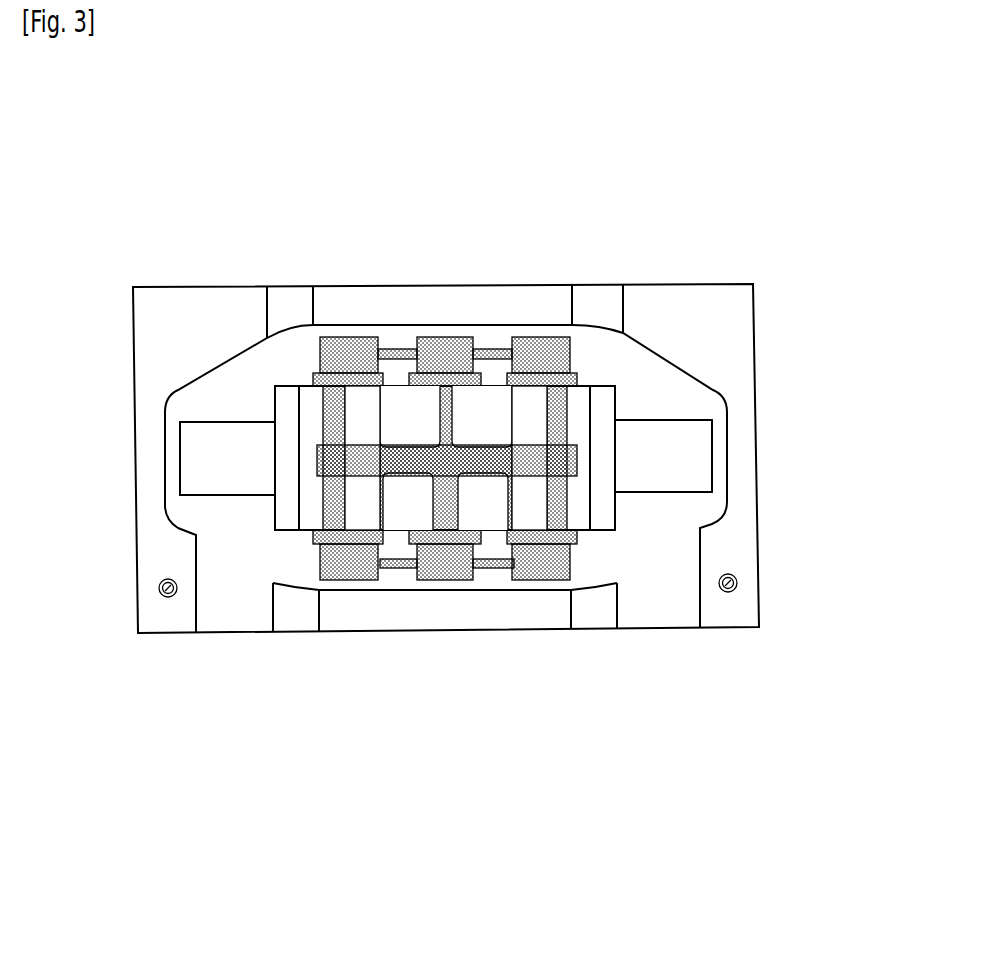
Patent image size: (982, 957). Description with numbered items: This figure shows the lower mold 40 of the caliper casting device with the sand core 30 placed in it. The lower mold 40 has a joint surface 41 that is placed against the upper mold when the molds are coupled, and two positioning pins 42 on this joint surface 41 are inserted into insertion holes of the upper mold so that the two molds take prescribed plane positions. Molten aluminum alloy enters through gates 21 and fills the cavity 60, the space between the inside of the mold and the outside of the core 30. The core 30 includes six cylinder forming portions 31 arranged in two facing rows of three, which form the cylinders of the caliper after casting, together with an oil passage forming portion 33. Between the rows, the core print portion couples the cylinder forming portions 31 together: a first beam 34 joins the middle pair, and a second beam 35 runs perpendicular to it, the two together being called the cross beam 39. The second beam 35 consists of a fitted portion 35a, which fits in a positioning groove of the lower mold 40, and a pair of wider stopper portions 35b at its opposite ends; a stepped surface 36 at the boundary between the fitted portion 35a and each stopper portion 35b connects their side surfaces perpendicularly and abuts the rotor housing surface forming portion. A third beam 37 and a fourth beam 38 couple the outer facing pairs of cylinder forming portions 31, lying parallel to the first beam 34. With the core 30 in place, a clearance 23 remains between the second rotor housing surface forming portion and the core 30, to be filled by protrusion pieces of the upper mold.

The lower mold 40 is at (688, 130).
The gate 21 is at (235, 636).
The joint surface 41 is at (165, 300).
The cavity 60 is at (285, 553).
The positioning pin 42 is at (158, 589).
The cylinder forming portion 31 is at (366, 342).
The oil passage forming portion 33 is at (489, 352).
The stepped surface 36 is at (400, 352).
The core 30 is at (450, 538).
The clearance 23 is at (310, 398).
The third beam 37 is at (330, 399).
The fourth beam 38 is at (567, 408).
The cross beam 39 is at (450, 661).
The second beam 35 is at (380, 660).
The fitted portion 35a is at (422, 458).
The stopper portion 35b is at (330, 455).
The first beam 34 is at (433, 474).